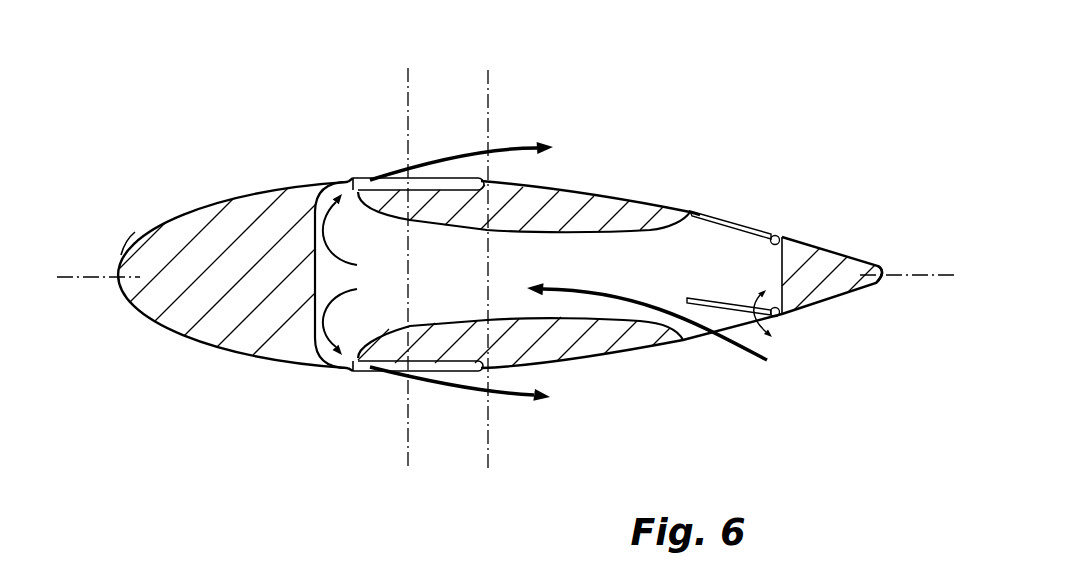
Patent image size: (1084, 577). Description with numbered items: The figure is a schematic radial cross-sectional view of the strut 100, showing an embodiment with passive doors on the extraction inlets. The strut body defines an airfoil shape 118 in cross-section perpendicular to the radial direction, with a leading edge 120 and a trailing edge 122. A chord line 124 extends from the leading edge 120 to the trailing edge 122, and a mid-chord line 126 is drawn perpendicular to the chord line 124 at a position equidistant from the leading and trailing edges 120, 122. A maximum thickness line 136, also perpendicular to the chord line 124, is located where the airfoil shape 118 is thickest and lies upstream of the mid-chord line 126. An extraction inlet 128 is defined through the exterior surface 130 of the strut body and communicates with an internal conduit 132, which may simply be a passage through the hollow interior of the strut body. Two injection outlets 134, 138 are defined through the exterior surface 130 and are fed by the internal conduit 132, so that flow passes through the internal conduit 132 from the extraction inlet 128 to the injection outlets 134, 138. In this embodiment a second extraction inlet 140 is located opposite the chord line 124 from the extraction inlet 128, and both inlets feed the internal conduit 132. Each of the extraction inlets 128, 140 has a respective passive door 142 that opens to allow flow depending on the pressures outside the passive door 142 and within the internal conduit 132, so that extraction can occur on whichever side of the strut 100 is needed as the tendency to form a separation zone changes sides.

The strut 100 is at (152, 170).
The airfoil shape 118 is at (232, 357).
The leading edge 120 is at (118, 252).
The trailing edge 122 is at (891, 264).
The chord line 124 is at (75, 281).
The mid-chord line 126 is at (488, 87).
The extraction inlet 128 is at (713, 353).
The exterior surface 130 is at (217, 305).
The internal conduit 132 is at (435, 284).
The injection outlet 134 is at (370, 163).
The maximum thickness line 136 is at (408, 78).
The injection outlet 138 is at (368, 385).
The second extraction inlet 140 is at (710, 196).
The passive door 142 is at (750, 227).